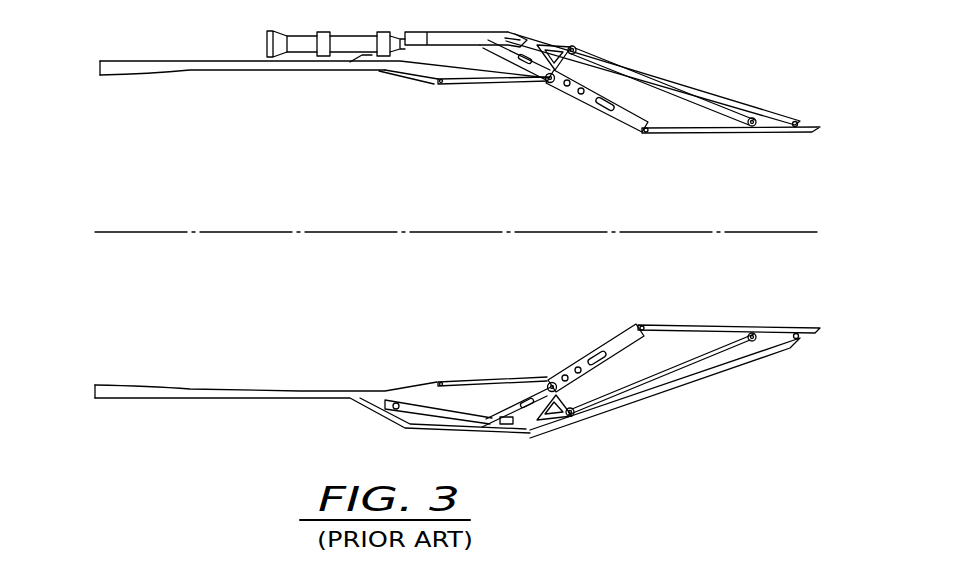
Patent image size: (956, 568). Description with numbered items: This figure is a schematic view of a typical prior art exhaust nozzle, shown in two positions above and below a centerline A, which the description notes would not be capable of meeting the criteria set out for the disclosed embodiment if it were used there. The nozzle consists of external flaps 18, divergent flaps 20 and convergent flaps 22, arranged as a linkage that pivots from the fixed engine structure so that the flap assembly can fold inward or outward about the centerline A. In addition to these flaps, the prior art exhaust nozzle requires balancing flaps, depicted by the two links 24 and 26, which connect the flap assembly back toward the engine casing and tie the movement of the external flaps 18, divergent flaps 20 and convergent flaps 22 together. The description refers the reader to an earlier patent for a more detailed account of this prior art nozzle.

The external flaps 18 is at (667, 72).
The divergent flaps 20 is at (685, 133).
The convergent flaps 22 is at (597, 108).
The balancing flap 24 is at (432, 62).
The balancing flap 26 is at (517, 63).
The axis A is at (225, 233).